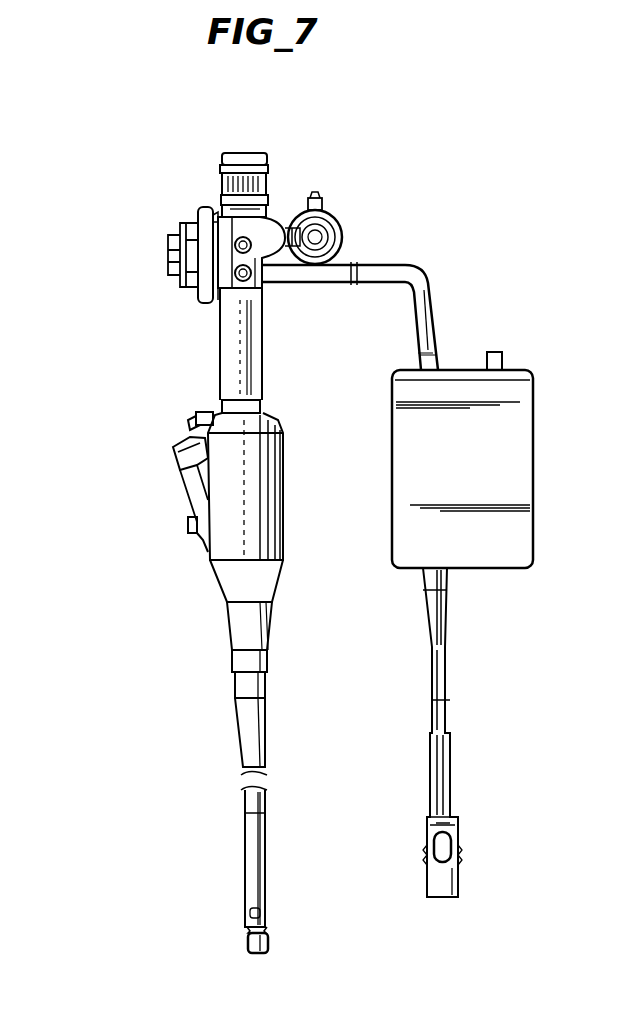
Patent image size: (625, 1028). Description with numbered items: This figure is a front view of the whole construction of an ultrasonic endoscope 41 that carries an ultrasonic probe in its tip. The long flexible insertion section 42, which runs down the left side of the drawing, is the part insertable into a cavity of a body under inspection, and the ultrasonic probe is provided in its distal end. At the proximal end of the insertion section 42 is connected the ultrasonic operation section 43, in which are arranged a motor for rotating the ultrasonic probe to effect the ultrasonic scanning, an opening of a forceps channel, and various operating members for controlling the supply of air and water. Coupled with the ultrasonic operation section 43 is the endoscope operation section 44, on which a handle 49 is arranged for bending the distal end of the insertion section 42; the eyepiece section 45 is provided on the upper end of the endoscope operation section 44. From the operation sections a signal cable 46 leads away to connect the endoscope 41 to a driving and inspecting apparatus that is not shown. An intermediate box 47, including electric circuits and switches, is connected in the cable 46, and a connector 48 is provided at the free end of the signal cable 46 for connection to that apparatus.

The ultrasonic endoscope 41 is at (66, 205).
The flexible insertion section 42 is at (142, 958).
The ultrasonic operation section 43 is at (137, 583).
The endoscope operation section 44 is at (133, 393).
The eyepiece section 45 is at (257, 153).
The signal cable 46 is at (420, 270).
The intermediate box 47 is at (522, 472).
The connector 48 is at (458, 878).
The handle 49 is at (197, 213).